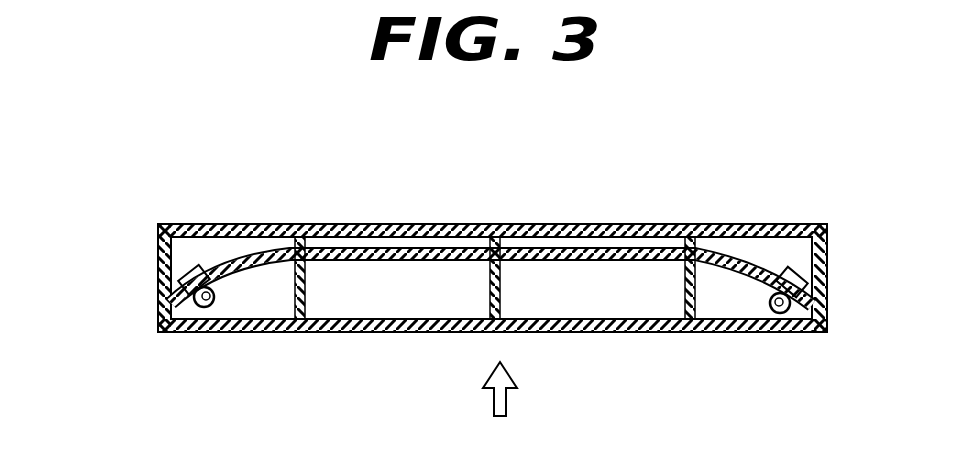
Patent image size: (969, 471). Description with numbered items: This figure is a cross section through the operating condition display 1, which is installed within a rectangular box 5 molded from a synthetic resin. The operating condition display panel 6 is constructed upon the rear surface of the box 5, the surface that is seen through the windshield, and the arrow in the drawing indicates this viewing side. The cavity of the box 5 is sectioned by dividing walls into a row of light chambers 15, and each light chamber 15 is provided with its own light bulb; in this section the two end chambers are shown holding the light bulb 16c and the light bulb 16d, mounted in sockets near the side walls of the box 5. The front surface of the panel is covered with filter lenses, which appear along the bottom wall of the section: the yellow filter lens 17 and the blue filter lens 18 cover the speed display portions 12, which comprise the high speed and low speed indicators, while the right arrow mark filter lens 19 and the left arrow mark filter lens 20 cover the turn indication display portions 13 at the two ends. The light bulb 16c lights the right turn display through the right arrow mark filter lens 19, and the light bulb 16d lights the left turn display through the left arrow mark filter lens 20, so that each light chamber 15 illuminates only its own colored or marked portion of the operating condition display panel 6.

The operating condition display 1 is at (150, 298).
The box 5 is at (662, 238).
The operating condition display panel 6 is at (500, 408).
The speed display portion 12 is at (324, 340).
The turn indication display portion 13 is at (248, 340).
The light chamber 15 is at (258, 283).
The light bulb 16c is at (224, 287).
The light bulb 16d is at (762, 283).
The yellow filter lens 17 is at (404, 333).
The blue filter lens 18 is at (560, 333).
The right arrow mark filter lens 19 is at (194, 333).
The left arrow mark filter lens 20 is at (782, 333).